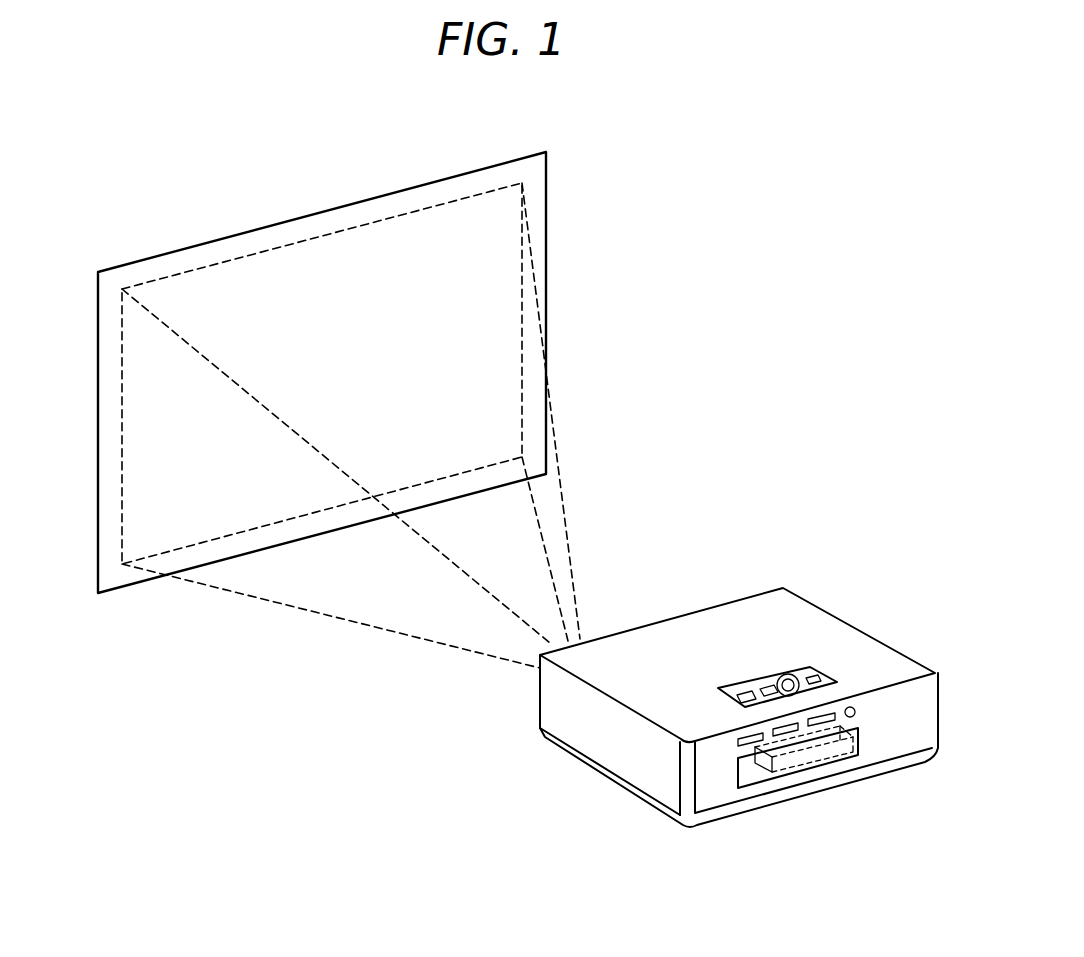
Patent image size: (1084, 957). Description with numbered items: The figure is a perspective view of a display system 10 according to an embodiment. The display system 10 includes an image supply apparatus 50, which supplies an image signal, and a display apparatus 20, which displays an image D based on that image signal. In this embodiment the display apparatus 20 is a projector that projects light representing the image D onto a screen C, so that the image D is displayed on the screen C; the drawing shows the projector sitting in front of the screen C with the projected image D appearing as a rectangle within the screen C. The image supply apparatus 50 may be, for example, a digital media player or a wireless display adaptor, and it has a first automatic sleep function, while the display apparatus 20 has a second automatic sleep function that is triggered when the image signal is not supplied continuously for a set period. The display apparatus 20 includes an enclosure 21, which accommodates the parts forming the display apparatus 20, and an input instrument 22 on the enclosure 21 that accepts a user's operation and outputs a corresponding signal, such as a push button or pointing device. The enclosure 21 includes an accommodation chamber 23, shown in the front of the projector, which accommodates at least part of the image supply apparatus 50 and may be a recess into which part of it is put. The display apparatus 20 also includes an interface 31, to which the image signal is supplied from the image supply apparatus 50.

The display system 10 is at (852, 579).
The display apparatus 20 is at (902, 653).
The enclosure 21 is at (862, 640).
The input instrument 22 is at (776, 677).
The accommodation chamber 23 is at (760, 783).
The interface (I/F) 31 is at (858, 748).
The image supply apparatus 50 is at (800, 752).
The screen C is at (112, 368).
The image D is at (363, 222).